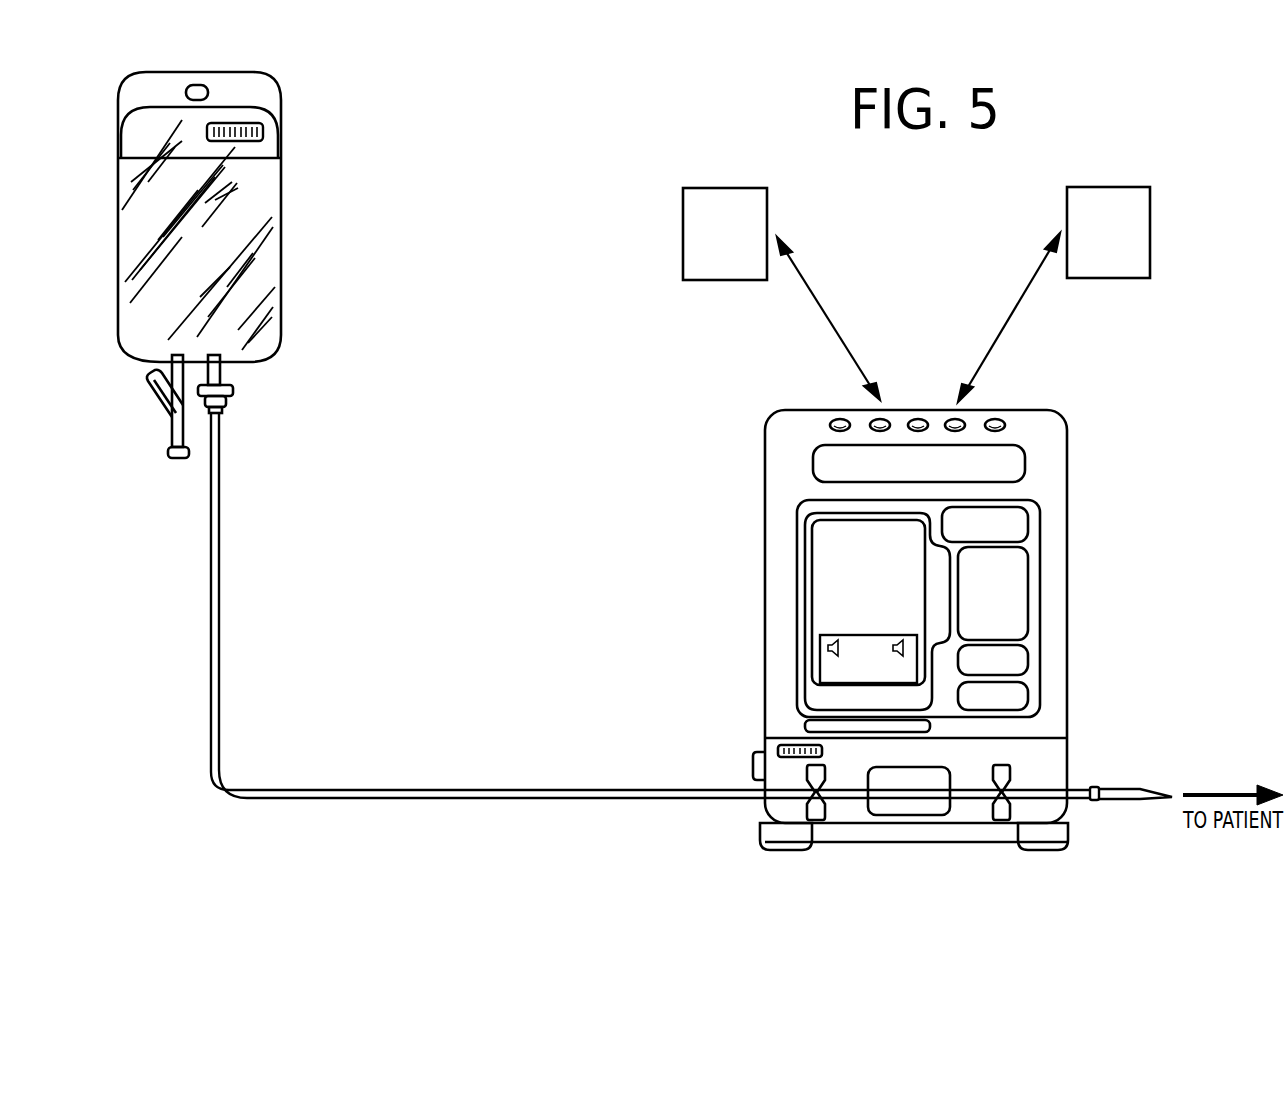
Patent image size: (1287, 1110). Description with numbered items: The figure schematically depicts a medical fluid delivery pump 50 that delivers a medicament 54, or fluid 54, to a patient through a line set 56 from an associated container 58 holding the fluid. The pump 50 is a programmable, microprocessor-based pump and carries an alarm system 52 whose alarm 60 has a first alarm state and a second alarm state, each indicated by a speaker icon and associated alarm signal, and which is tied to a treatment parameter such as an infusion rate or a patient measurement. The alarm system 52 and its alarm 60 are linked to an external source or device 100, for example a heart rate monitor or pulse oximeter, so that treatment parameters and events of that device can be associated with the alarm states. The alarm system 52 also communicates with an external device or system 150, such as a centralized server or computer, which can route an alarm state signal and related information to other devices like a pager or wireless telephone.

The medical fluid delivery pump 50 is at (770, 660).
The alarm system 52 is at (886, 575).
The medicament 54 is at (260, 198).
The line set 56 is at (497, 790).
The container 58 is at (273, 138).
The alarm 60 is at (867, 636).
The external source or device 100 is at (743, 248).
The external device or system 150 is at (1126, 248).